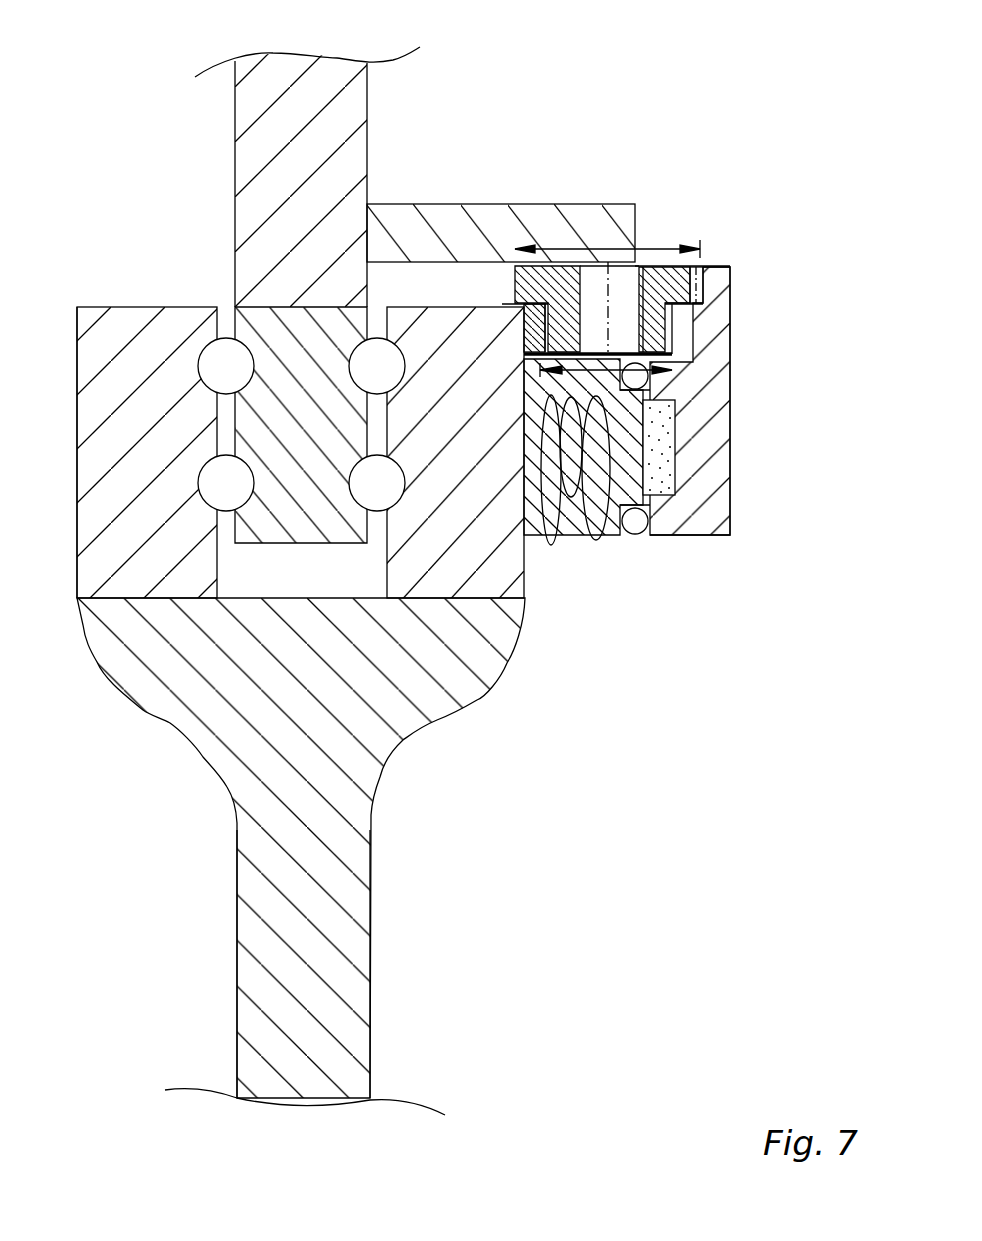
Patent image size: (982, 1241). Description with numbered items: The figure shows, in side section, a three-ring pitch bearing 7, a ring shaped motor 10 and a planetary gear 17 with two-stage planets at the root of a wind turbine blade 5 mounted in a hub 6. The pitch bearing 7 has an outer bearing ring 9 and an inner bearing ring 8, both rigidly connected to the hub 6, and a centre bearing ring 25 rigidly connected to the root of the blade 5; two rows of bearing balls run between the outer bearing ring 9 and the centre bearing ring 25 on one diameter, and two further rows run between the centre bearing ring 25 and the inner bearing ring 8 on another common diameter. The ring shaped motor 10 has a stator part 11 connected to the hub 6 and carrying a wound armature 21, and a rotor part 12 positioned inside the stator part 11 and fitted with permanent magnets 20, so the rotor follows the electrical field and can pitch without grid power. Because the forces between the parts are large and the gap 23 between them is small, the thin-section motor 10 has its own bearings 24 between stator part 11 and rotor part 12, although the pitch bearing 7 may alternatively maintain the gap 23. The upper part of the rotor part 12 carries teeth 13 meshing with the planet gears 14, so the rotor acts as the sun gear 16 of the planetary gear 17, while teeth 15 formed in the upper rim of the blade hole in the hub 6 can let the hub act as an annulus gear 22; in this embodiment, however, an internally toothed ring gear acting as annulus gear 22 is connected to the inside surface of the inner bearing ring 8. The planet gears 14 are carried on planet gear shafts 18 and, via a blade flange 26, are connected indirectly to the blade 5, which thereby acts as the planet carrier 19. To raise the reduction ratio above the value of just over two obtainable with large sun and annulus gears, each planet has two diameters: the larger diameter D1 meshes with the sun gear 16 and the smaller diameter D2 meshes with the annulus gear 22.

The blade 5 is at (320, 120).
The hub 6 is at (330, 795).
The pitch bearing 7 is at (70, 612).
The inner bearing ring 8 is at (517, 600).
The outer bearing ring 9 is at (88, 450).
The ring shaped motor 10 is at (745, 552).
The stator part 11 is at (600, 560).
The rotor part 12 is at (722, 515).
The teeth 13 is at (700, 292).
The planet gears 14 is at (663, 256).
The teeth 15 is at (526, 325).
The sun gear 16 is at (717, 298).
The planetary gear 17 is at (655, 318).
The planet gear shafts 18 is at (625, 315).
The planet carrier 19 is at (535, 228).
The permanent magnets 20 is at (672, 468).
The wound armature 21 is at (562, 555).
The annulus gear 22 is at (548, 330).
The gap 23 is at (655, 497).
The bearings 24 is at (640, 527).
The centre bearing ring 25 is at (257, 318).
The blade flange 26 is at (410, 218).
The larger gear diameter D1 is at (607, 238).
The smaller gear diameter D2 is at (606, 380).